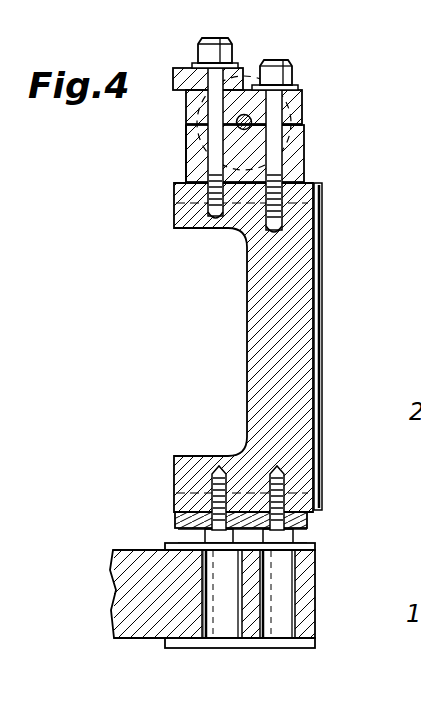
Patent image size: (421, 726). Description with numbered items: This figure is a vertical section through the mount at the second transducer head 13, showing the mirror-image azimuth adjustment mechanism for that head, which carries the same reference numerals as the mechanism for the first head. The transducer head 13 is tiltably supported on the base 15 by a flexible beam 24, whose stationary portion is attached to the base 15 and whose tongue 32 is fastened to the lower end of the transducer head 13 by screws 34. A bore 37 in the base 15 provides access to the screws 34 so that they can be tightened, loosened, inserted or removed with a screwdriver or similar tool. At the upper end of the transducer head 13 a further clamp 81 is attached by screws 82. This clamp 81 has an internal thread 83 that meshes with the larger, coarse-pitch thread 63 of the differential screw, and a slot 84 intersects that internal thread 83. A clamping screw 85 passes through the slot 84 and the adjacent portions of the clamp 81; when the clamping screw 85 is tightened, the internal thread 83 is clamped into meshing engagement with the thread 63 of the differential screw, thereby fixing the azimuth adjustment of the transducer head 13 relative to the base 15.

The transducer head 13 is at (240, 352).
The base 15 is at (317, 597).
The flexible beam 24 is at (168, 522).
The tongue 32 is at (307, 523).
The screws 34 is at (203, 553).
The bore 37 is at (258, 617).
The thread 63 is at (186, 130).
The clamp 81 is at (306, 162).
The screws 82 is at (229, 48).
The internal thread 83 is at (186, 170).
The slot 84 is at (304, 110).
The clamping screw 85 is at (290, 70).